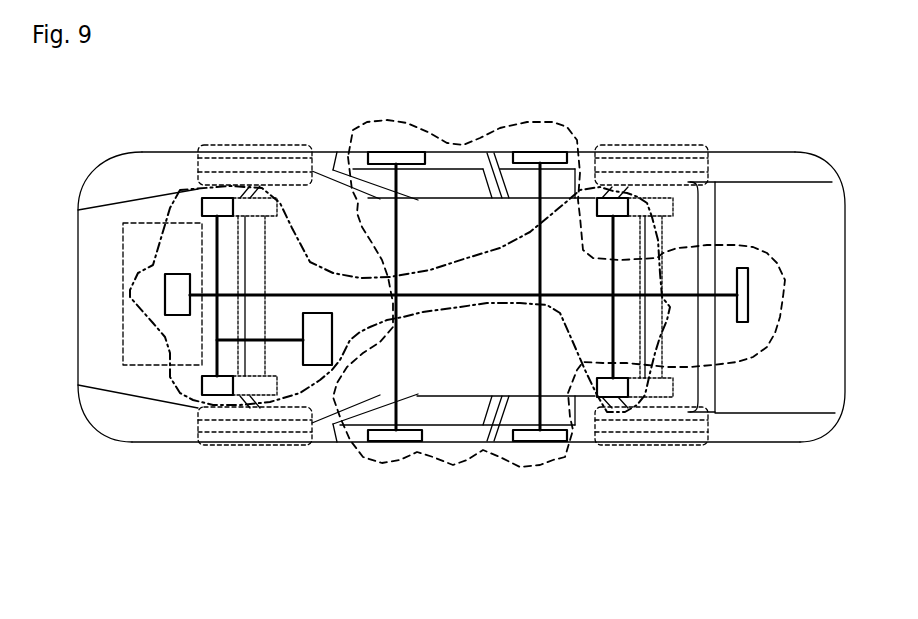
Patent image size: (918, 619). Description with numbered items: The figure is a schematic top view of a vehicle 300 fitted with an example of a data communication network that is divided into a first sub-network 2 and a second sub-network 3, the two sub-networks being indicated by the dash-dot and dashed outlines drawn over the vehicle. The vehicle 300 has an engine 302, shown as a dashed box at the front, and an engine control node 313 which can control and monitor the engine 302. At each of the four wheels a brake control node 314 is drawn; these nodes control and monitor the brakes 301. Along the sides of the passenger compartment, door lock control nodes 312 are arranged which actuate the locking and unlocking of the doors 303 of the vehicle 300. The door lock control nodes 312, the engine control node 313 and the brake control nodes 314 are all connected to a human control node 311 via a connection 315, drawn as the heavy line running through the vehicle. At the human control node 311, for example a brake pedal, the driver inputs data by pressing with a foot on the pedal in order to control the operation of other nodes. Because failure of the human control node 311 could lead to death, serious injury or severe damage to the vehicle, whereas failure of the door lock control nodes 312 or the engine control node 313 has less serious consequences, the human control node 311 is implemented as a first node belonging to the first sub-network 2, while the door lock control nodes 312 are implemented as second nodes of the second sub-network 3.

The first sub-network 2 is at (240, 188).
The second sub-network 3 is at (575, 135).
The vehicle 300 is at (130, 412).
The brakes 301 is at (255, 207).
The engine 302 is at (180, 248).
The doors 303 is at (460, 155).
The human control node 311 is at (333, 320).
The door lock control nodes 312 is at (395, 157).
The engine control node 313 is at (178, 293).
The brake control nodes 314 is at (218, 207).
The connection 315 is at (560, 313).